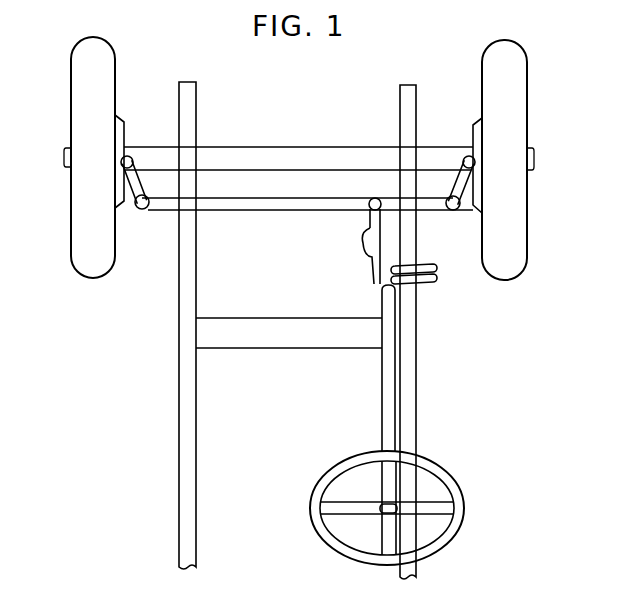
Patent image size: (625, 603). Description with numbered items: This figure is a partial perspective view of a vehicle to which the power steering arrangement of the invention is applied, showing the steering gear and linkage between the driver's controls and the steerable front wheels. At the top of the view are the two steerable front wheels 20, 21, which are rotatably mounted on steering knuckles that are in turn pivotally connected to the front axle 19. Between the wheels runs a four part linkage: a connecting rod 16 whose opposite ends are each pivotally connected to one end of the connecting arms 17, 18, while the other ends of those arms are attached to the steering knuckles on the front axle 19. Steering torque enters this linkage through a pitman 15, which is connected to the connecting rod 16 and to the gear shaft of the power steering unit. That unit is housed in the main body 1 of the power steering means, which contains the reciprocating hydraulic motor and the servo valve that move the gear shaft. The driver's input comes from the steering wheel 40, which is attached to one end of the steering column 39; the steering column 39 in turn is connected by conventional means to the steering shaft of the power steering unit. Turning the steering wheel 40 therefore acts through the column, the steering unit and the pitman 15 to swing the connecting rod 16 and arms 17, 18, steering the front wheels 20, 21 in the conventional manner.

The main body 1 is at (373, 258).
The pitman 15 is at (372, 212).
The connecting rod 16 is at (278, 205).
The connecting arm 17 is at (135, 165).
The connecting arm 18 is at (462, 150).
The front axle 19 is at (288, 152).
The steerable front wheel 20 is at (78, 90).
The steerable front wheel 21 is at (510, 200).
The steering column 39 is at (385, 406).
The steering wheel 40 is at (450, 477).